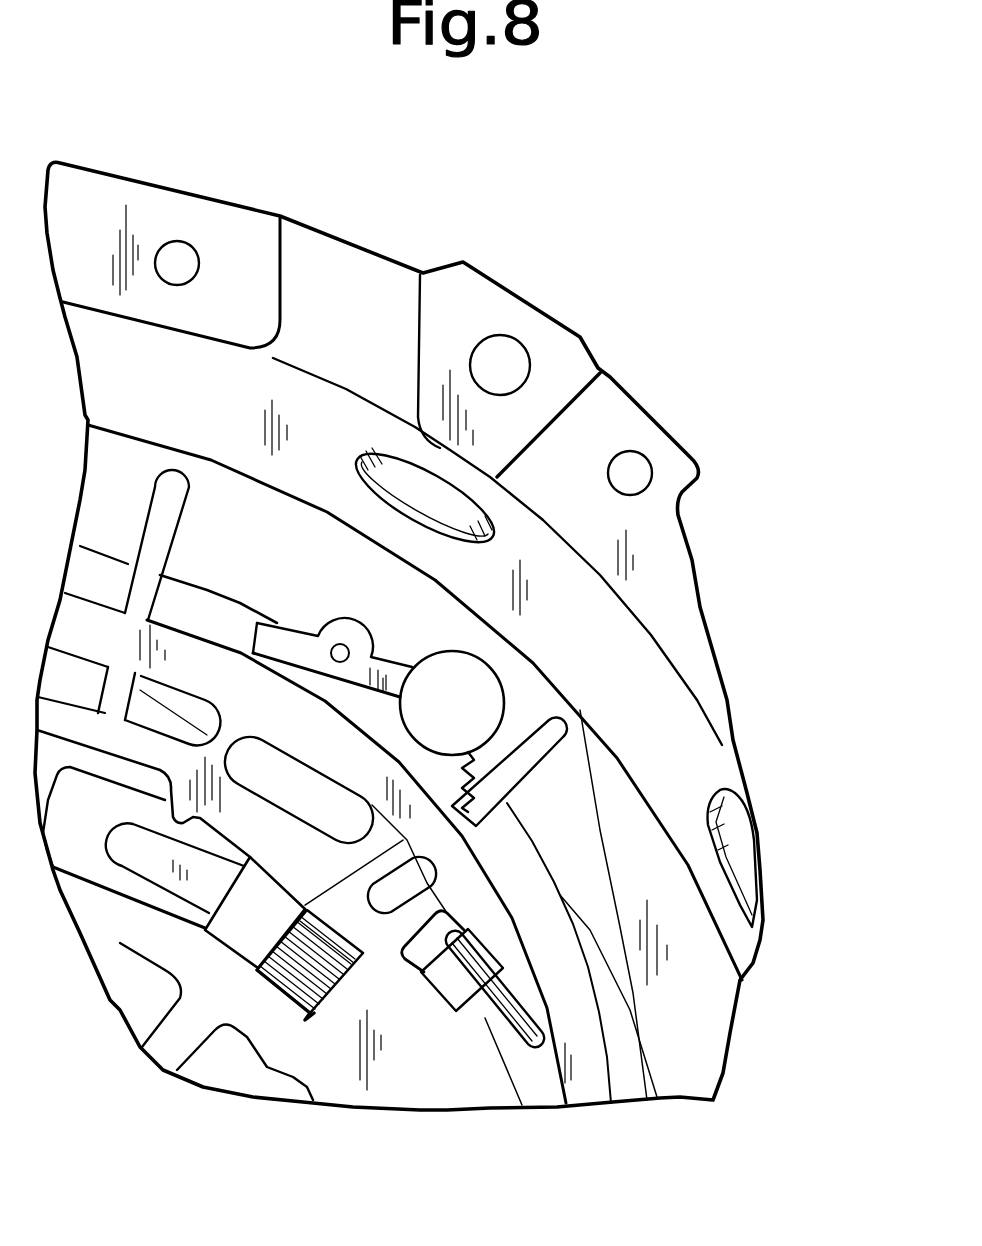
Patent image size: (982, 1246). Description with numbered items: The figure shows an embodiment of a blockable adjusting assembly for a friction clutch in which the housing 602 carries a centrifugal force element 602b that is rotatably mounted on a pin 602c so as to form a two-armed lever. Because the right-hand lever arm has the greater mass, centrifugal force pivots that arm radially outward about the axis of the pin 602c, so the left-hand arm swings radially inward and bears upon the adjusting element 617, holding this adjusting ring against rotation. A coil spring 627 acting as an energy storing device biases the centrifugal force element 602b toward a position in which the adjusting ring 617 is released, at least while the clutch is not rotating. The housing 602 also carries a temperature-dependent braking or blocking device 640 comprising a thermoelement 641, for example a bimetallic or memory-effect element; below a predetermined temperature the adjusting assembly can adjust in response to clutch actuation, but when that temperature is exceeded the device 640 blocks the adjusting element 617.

The housing 602 is at (600, 423).
The centrifugal force element 602b is at (475, 683).
The pin 602c is at (337, 645).
The adjusting element 617 is at (577, 1057).
The coil spring 627 is at (473, 760).
The braking or blocking device 640 is at (425, 995).
The thermoelement 641 is at (498, 1020).